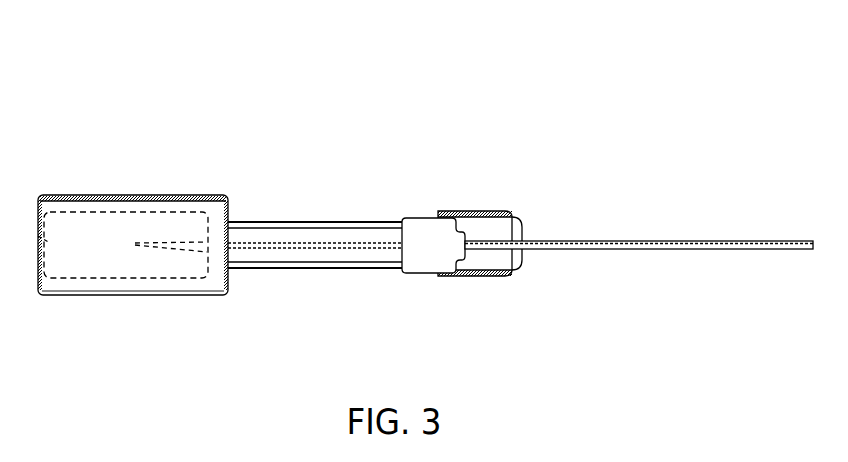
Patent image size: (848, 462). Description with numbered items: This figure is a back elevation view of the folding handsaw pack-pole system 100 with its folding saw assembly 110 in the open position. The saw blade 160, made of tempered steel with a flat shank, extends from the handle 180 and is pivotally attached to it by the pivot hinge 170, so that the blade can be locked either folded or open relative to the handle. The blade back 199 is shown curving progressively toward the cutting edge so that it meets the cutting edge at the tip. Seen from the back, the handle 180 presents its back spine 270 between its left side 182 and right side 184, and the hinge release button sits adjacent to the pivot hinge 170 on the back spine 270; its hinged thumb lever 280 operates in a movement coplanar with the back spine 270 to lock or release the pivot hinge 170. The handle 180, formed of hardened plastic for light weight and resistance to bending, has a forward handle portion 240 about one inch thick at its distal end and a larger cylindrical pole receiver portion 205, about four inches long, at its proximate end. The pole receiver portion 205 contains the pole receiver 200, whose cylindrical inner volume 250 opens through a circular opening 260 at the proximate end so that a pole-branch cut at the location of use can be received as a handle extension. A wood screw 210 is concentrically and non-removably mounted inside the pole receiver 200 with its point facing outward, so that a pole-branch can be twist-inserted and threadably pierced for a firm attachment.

The folding handsaw pack-pole system 100 is at (436, 60).
The folding saw assembly 110 is at (452, 95).
The saw blade 160 is at (668, 241).
The pivot hinge 170 is at (470, 213).
The handle 180 is at (322, 222).
The left side 182 is at (353, 230).
The right side 184 is at (368, 262).
The blade back 199 is at (565, 242).
The pole receiver 200 is at (38, 258).
The pole receiver portion 205 is at (100, 195).
The wood screw 210 is at (180, 248).
The forward handle portion 240 is at (305, 258).
The cylindrical inner volume 250 is at (98, 248).
The circular opening 260 is at (50, 243).
The back spine 270 is at (265, 245).
The hinged thumb lever 280 is at (412, 230).